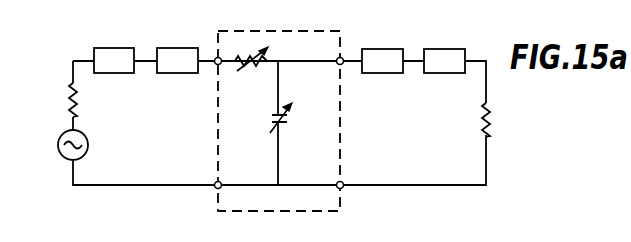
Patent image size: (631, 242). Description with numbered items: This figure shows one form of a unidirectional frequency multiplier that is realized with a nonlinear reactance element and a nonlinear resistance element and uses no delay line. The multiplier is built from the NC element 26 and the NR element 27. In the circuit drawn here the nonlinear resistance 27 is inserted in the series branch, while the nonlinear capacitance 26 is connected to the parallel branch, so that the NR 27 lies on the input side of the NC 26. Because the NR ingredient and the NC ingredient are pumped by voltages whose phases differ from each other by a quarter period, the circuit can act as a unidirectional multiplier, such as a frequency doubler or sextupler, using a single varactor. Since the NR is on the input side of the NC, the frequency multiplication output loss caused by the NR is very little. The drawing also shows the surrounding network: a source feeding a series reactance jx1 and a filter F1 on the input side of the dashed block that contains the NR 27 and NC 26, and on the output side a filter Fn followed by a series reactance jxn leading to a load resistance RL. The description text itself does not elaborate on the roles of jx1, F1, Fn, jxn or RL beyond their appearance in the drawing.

The nonlinear resistance element 27 is at (245, 63).
The nonlinear capacitance element 26 is at (296, 123).
The nonlinear resistance ingredient NR is at (251, 76).
The nonlinear capacitance ingredient NC is at (295, 135).
The load resistor RL is at (498, 120).
The first reactance jx1 is at (114, 60).
The first filter F1 is at (177, 60).
The nth filter Fn is at (382, 61).
The nth reactance jxn is at (444, 61).